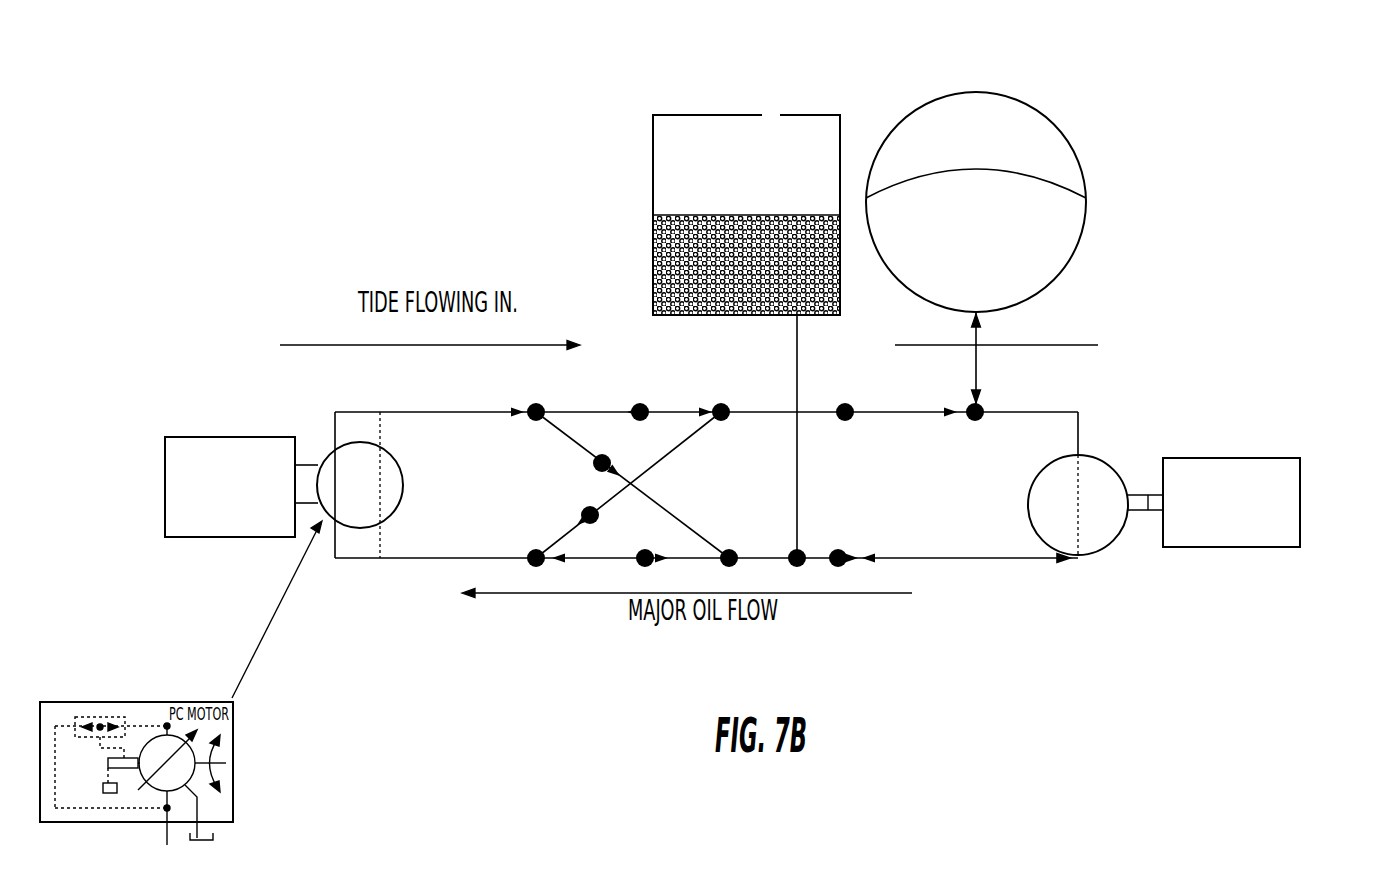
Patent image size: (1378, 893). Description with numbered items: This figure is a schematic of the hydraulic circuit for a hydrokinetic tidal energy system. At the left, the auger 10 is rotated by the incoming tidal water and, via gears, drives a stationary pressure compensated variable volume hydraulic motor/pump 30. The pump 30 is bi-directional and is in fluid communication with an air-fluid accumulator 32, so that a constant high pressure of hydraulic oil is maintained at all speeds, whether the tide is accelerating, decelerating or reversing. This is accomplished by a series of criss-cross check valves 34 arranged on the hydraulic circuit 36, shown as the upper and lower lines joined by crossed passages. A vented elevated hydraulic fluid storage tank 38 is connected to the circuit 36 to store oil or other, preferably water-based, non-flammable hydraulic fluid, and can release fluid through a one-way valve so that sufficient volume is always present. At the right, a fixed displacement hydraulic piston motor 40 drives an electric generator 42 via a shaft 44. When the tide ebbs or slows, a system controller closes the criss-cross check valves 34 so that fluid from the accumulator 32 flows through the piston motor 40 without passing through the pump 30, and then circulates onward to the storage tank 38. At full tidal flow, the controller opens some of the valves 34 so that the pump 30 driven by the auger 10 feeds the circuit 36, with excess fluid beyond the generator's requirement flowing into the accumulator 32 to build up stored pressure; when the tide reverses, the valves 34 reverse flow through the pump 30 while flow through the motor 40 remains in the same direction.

The auger 10 is at (178, 428).
The pressure compensated variable volume hydraulic motor/pump 30 is at (348, 462).
The air-fluid accumulator 32 is at (1050, 140).
The criss-cross check valves 34 is at (669, 386).
The hydraulic circuit 36 is at (975, 560).
The vented elevated hydraulic fluid storage tank 38 is at (653, 157).
The fixed displacement hydraulic piston motor 40 is at (1093, 525).
The electric generator 42 is at (1263, 458).
The shaft 44 is at (1148, 496).